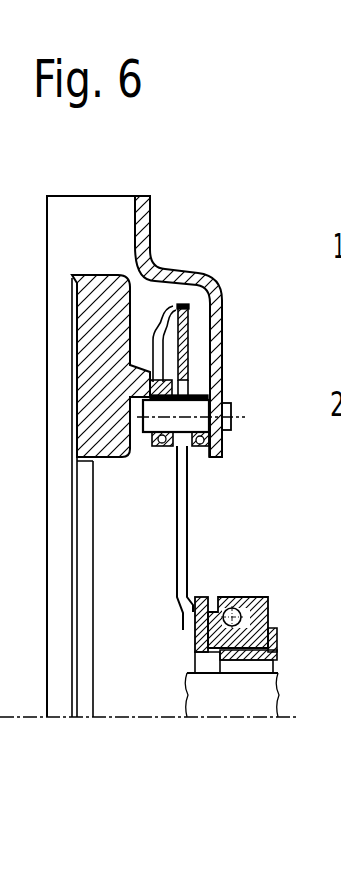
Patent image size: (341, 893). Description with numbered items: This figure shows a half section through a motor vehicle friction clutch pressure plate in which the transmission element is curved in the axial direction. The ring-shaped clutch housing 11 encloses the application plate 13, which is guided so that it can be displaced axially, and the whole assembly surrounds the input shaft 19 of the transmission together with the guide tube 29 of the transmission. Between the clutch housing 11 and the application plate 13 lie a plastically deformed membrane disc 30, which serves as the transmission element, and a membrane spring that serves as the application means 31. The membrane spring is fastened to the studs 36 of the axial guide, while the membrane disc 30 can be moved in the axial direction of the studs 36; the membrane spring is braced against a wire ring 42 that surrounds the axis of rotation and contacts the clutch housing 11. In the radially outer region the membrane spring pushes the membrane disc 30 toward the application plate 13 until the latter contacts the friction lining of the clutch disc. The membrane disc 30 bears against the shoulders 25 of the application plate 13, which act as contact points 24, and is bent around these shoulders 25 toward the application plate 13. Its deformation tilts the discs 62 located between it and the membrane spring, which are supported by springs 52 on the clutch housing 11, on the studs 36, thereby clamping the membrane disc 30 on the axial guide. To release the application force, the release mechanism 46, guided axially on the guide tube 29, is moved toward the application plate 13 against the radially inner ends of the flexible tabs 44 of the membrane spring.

The clutch housing 11 is at (142, 203).
The application plate 13 is at (98, 287).
The input shaft 19 is at (270, 698).
The contact points 24 is at (152, 385).
The shoulders 25 is at (150, 386).
The guide tube 29 is at (183, 297).
The membrane disc 30 is at (176, 314).
The application means 31 is at (192, 323).
The studs 36 is at (236, 409).
The wire ring 42 is at (212, 443).
The flexible tabs 44 is at (180, 529).
The release mechanism 46 is at (260, 597).
The springs 52 is at (192, 447).
The discs 62 is at (165, 446).